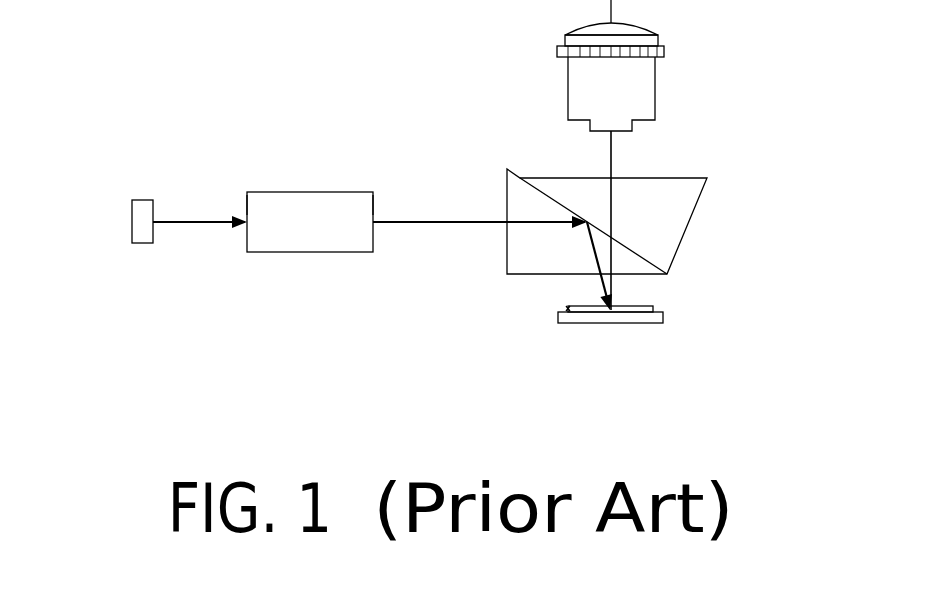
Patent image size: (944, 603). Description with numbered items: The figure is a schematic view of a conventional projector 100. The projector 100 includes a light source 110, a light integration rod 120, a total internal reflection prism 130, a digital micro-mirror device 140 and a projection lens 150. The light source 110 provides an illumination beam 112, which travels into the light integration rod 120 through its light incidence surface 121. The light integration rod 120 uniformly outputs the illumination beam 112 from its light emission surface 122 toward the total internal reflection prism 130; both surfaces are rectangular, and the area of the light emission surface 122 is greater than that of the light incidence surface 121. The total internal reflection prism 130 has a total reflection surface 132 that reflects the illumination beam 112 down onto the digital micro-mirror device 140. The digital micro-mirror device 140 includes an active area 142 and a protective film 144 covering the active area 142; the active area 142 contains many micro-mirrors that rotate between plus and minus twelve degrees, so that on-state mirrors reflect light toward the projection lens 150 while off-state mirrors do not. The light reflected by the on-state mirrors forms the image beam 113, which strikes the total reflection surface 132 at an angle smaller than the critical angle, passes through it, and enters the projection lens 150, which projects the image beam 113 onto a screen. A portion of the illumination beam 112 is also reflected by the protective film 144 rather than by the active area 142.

The conventional projector 100 is at (793, 403).
The light source 110 is at (133, 215).
The illumination beam 112 is at (197, 225).
The image beam 113 is at (613, 143).
The light integration rod 120 is at (312, 242).
The light incidence surface 121 is at (232, 211).
The light emission surface 122 is at (388, 208).
The total internal reflection prism 130 is at (685, 217).
The total reflection surface 132 is at (492, 157).
The digital micro-mirror device 140 is at (615, 318).
The active area 142 is at (566, 297).
The protective film 144 is at (655, 308).
The projection lens 150 is at (650, 90).